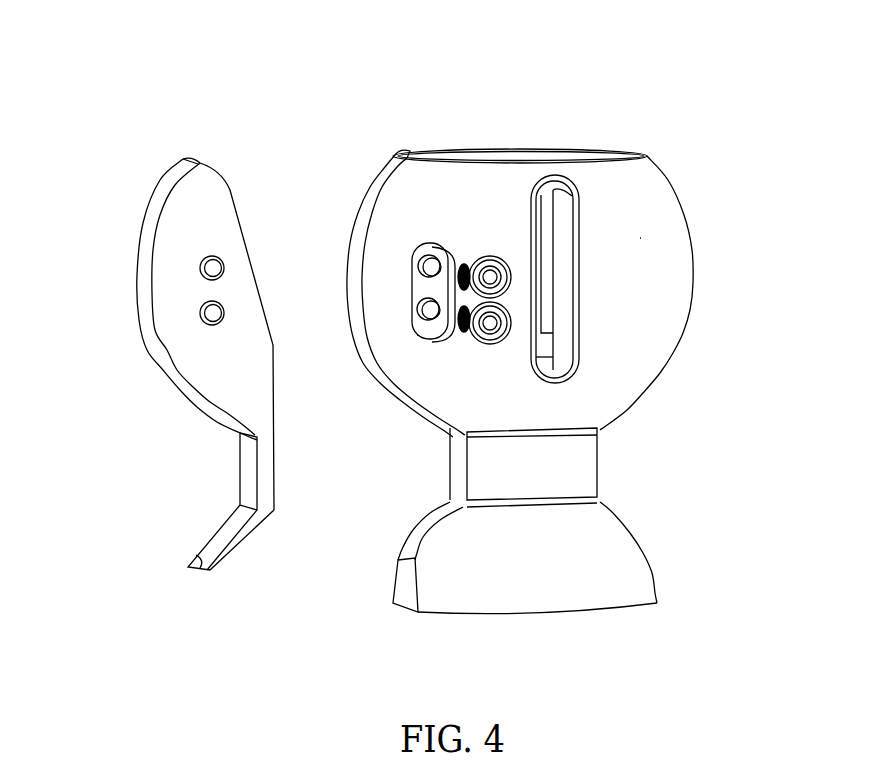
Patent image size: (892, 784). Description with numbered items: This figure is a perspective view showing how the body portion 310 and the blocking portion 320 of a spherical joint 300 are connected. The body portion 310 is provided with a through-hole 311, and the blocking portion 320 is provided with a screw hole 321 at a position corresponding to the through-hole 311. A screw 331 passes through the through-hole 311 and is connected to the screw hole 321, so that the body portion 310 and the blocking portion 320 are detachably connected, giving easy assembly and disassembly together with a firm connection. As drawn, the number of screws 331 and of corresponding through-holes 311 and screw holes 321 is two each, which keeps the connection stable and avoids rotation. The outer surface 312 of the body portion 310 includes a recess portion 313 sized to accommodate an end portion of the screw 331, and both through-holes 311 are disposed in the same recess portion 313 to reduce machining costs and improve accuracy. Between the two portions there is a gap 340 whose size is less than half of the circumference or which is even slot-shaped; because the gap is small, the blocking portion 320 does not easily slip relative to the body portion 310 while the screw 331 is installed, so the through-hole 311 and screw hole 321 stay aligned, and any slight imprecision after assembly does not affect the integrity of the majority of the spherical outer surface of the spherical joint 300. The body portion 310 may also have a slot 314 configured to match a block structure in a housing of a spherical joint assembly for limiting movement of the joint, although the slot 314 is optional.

The spherical joint 300 is at (846, 47).
The body portion 310 is at (727, 203).
The through-hole 311 is at (413, 253).
The outer surface 312 is at (640, 238).
The recess portion 313 is at (417, 335).
The slot 314 is at (578, 265).
The blocking portion 320 is at (124, 234).
The screw hole 321 is at (200, 268).
The screw 331 is at (507, 330).
The gap 340 is at (387, 162).